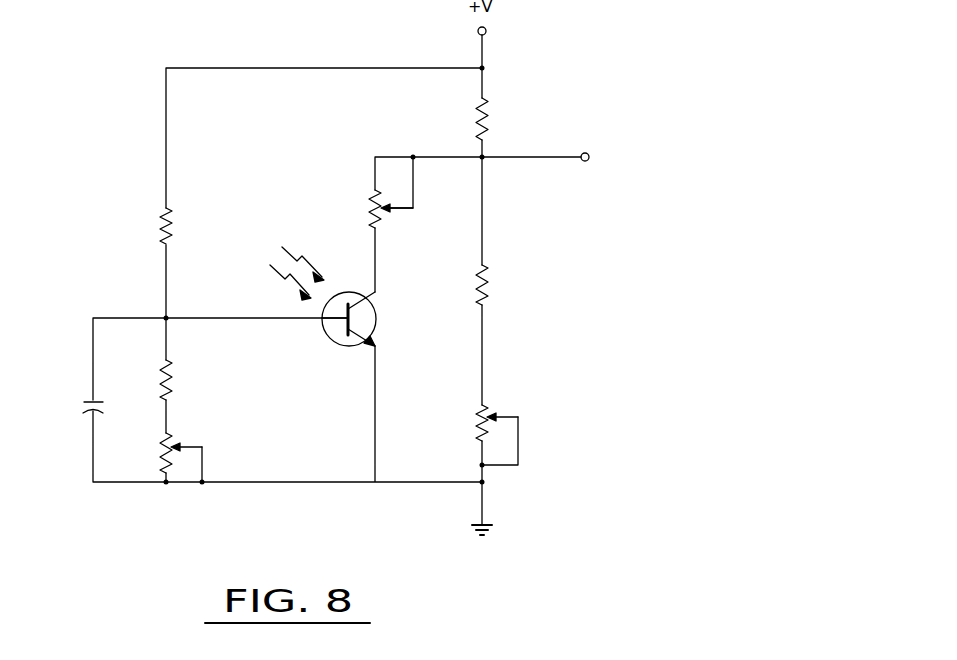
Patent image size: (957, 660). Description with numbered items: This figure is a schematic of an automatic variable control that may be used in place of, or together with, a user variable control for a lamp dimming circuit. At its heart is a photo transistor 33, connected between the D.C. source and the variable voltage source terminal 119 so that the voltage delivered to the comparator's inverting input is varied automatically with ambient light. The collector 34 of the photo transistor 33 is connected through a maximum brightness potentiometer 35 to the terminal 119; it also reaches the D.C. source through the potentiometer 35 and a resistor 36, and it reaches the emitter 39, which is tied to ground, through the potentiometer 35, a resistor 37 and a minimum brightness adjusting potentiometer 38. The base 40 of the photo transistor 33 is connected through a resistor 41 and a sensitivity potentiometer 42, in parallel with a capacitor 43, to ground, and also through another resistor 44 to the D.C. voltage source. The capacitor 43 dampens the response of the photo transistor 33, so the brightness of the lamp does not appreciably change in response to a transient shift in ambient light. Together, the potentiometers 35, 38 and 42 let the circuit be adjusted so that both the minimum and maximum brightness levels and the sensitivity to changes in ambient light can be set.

The photo transistor 33 is at (357, 322).
The collector 34 is at (365, 298).
The maximum brightness potentiometer 35 is at (378, 196).
The resistor 36 is at (488, 111).
The resistor 37 is at (488, 278).
The minimum brightness adjusting potentiometer 38 is at (485, 408).
The emitter 39 is at (368, 340).
The base 40 is at (327, 319).
The resistor 41 is at (172, 372).
The sensitivity potentiometer 42 is at (168, 438).
The capacitor 43 is at (90, 402).
The resistor 44 is at (160, 222).
The variable voltage source terminal 119 is at (606, 157).